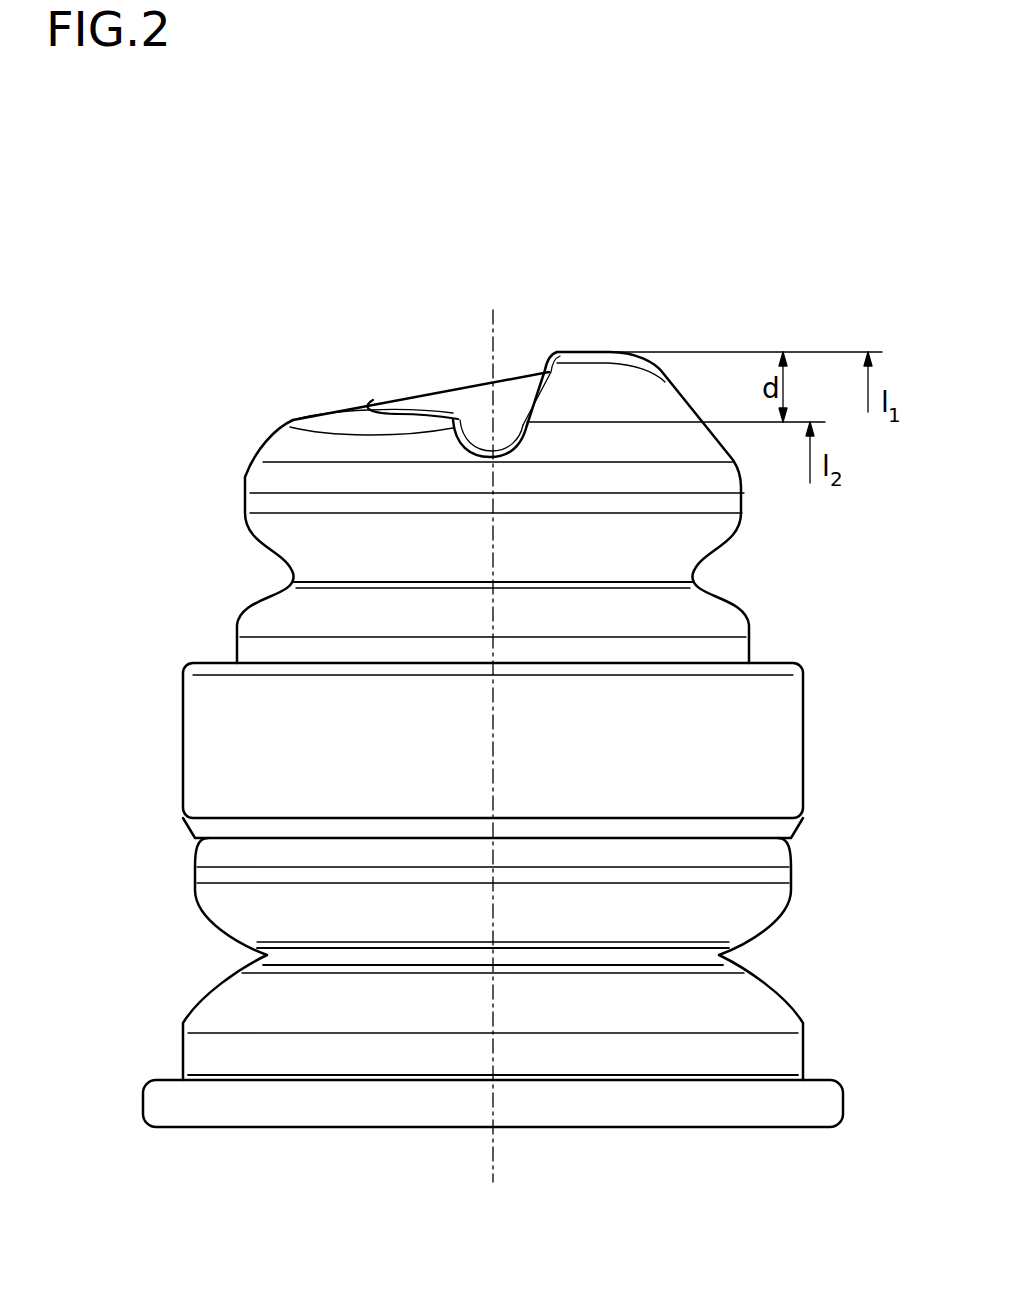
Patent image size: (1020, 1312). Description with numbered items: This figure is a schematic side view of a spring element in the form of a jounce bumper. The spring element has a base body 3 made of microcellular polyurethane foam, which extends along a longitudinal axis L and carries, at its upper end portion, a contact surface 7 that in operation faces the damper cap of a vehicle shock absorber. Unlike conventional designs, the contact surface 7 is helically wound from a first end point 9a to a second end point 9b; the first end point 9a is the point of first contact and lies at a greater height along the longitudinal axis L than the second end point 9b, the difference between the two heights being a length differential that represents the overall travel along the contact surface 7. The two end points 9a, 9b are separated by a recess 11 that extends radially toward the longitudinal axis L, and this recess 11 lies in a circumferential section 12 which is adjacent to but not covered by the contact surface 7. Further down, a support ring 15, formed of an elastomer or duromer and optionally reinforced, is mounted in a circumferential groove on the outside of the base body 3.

The base body 3 is at (266, 613).
The contact surface 7 is at (447, 387).
The first end point 9a is at (584, 357).
The second end point 9b is at (462, 419).
The recess 11 is at (502, 441).
The circumferential section 12 is at (558, 242).
The support ring 15 is at (248, 747).
The longitudinal axis L is at (493, 1168).